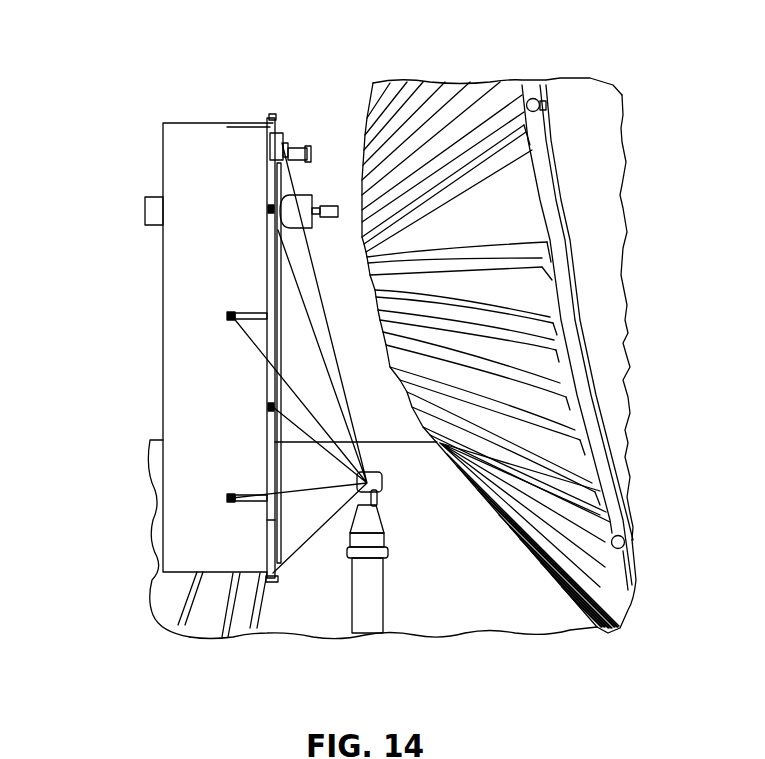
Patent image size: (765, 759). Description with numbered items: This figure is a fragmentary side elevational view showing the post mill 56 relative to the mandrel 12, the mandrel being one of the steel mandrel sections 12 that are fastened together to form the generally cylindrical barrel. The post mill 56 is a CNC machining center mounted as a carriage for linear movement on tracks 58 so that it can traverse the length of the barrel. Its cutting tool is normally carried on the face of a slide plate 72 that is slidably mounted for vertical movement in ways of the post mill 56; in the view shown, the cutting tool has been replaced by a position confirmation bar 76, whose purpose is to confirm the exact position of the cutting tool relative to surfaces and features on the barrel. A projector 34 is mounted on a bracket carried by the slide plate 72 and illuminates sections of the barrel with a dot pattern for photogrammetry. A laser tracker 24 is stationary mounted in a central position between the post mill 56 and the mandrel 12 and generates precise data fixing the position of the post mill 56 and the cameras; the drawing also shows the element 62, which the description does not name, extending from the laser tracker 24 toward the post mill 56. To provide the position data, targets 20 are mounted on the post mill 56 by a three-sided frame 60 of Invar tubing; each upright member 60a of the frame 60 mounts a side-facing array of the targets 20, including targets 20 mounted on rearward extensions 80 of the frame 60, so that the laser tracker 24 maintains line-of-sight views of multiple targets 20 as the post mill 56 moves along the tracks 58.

The mandrel section 12 is at (567, 500).
The target 20 is at (271, 95).
The laser tracker 24 is at (370, 608).
The projector 34 is at (287, 150).
The post mill 56 is at (180, 137).
The tracks 58 is at (260, 628).
The three-sided frame 60 is at (266, 127).
The upright member 60a is at (267, 523).
The laser beams 62 is at (320, 470).
The slide plate 72 is at (280, 183).
The position confirmation bar 76 is at (340, 212).
The rearward extension 80 is at (258, 311).